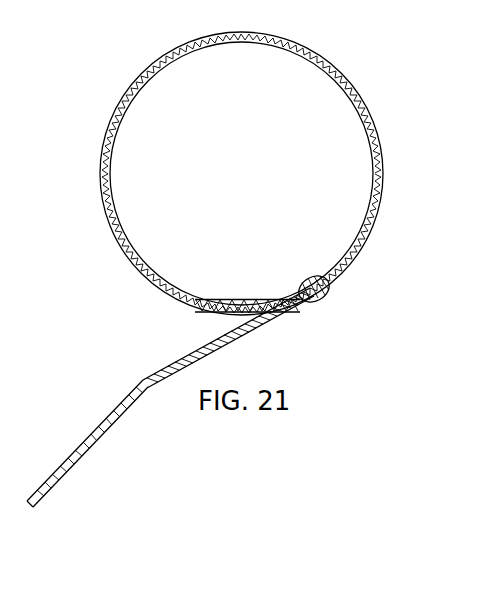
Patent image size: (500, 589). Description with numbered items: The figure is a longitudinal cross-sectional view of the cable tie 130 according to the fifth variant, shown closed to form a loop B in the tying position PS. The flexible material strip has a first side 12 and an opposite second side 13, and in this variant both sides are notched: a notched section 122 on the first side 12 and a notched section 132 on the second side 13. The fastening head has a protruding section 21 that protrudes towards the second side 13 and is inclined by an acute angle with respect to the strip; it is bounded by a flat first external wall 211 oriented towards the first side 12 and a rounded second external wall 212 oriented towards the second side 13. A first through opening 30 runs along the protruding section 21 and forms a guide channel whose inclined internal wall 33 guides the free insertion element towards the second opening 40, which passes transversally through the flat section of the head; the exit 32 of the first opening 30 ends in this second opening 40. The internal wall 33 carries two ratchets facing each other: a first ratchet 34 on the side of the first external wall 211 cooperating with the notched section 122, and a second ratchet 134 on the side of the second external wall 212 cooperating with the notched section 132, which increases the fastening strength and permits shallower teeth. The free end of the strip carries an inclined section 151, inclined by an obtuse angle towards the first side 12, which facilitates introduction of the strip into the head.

The first side 12 is at (348, 68).
The second side 13 is at (122, 212).
The cable tie 130 is at (78, 135).
The notched section 132 is at (372, 195).
The second ratchet 134 is at (308, 282).
The notched section 122 is at (378, 134).
The first through opening 30 is at (320, 266).
The exit 32 is at (300, 291).
The internal wall 33 is at (323, 288).
The first ratchet 34 is at (323, 298).
The protruding section 21 is at (318, 318).
The first external wall 211 is at (301, 306).
The second external wall 212 is at (310, 272).
The second opening 40 is at (266, 311).
The inclined section 151 is at (80, 457).
The tying position PS is at (107, 62).
The loop B is at (277, 48).